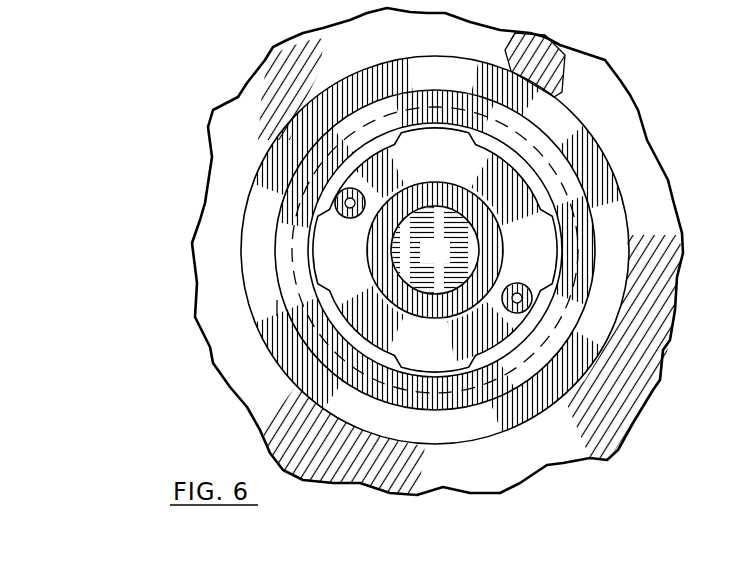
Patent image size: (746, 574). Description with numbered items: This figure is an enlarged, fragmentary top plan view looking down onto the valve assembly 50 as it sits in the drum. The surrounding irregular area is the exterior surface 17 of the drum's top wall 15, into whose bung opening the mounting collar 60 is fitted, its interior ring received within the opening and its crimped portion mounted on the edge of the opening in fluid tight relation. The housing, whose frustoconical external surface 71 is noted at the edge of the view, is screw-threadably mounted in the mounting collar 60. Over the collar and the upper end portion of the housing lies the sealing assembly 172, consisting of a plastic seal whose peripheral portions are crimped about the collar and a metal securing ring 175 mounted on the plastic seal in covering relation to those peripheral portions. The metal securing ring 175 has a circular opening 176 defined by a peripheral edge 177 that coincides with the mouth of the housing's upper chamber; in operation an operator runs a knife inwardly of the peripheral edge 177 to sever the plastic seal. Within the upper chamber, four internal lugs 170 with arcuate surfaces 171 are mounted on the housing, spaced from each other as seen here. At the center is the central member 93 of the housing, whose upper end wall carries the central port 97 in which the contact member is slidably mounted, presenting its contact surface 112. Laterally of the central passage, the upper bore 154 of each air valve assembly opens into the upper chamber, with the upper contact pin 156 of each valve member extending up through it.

The top wall 15 is at (682, 237).
The exterior surface 17 is at (608, 416).
The valve assembly 50 is at (276, 308).
The mounting collar 60 is at (300, 382).
The frustoconical external surface 71 is at (745, 8).
The central member 93 is at (455, 185).
The central port 97 is at (410, 212).
The contact surface 112 is at (449, 260).
The upper bore 154 is at (366, 205).
The upper contact pin 156 is at (351, 213).
The internal lugs 170 is at (413, 130).
The arcuate surfaces 171 is at (437, 141).
The sealing assembly 172 is at (493, 62).
The metal securing ring 175 is at (527, 93).
The circular opening 176 is at (527, 168).
The peripheral edge 177 is at (552, 322).